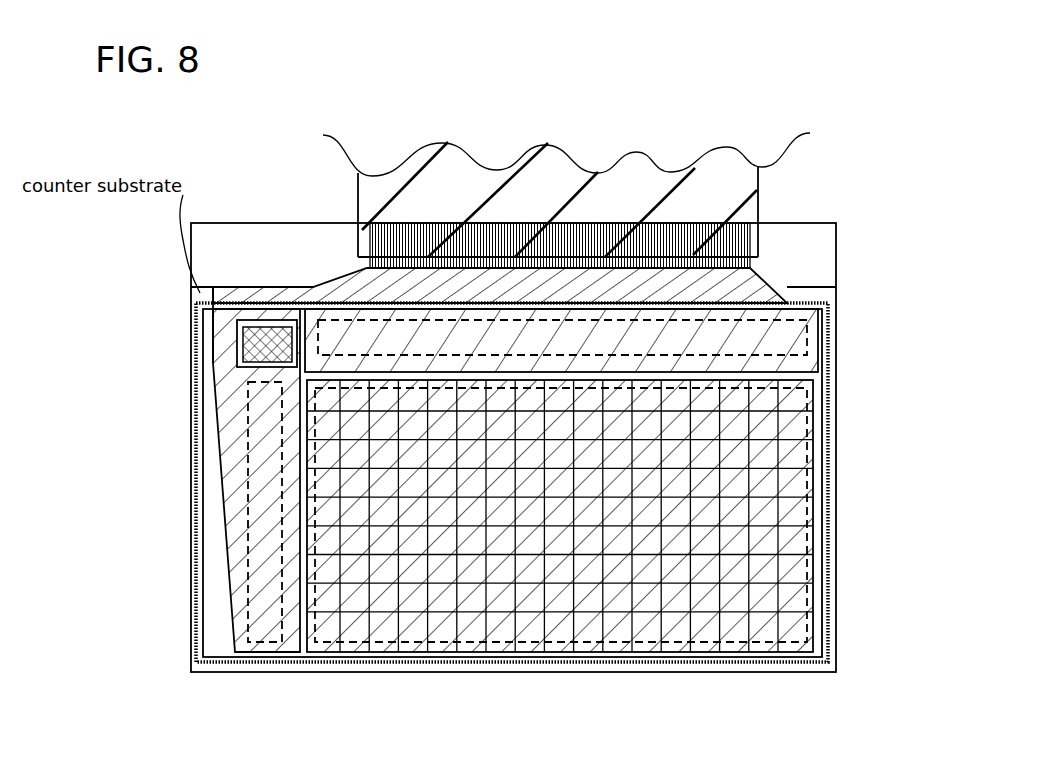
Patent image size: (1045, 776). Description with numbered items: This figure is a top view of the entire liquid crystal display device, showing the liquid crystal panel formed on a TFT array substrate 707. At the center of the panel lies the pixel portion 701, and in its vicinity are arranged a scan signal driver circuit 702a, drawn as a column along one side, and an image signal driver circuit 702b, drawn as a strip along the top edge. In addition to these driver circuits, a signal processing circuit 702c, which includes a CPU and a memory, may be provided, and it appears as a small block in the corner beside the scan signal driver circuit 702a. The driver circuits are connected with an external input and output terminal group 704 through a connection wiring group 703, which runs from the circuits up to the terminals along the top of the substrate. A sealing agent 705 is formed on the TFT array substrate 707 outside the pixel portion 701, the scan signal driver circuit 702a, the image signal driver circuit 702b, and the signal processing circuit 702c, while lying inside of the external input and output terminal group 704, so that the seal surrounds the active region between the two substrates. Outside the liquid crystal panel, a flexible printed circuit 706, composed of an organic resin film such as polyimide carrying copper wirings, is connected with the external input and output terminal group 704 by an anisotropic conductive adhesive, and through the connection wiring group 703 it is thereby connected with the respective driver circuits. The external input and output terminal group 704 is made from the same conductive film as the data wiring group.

The pixel portion 701 is at (612, 652).
The scan signal driver circuit 702a is at (246, 643).
The image signal driver circuit 702b is at (820, 311).
The signal processing circuit 702c is at (267, 353).
The connection wiring group 703 is at (346, 268).
The external input and output terminal group 704 is at (684, 257).
The sealing agent 705 is at (833, 317).
The flexible printed circuit 706 is at (747, 190).
The TFT array substrate 707 is at (266, 265).